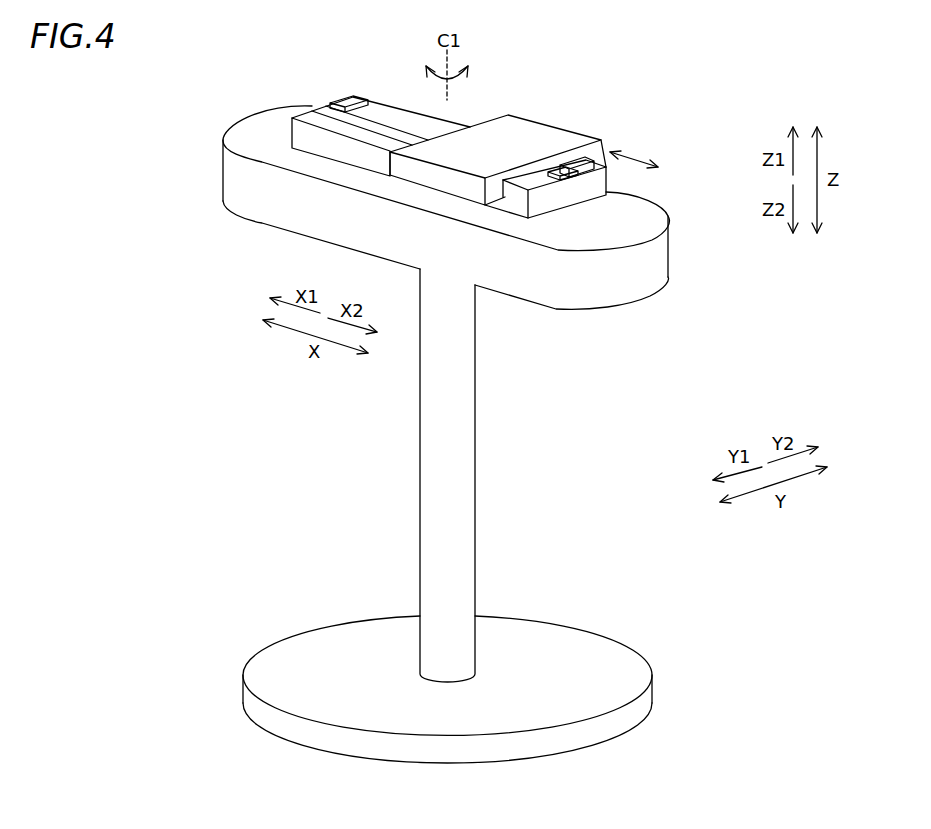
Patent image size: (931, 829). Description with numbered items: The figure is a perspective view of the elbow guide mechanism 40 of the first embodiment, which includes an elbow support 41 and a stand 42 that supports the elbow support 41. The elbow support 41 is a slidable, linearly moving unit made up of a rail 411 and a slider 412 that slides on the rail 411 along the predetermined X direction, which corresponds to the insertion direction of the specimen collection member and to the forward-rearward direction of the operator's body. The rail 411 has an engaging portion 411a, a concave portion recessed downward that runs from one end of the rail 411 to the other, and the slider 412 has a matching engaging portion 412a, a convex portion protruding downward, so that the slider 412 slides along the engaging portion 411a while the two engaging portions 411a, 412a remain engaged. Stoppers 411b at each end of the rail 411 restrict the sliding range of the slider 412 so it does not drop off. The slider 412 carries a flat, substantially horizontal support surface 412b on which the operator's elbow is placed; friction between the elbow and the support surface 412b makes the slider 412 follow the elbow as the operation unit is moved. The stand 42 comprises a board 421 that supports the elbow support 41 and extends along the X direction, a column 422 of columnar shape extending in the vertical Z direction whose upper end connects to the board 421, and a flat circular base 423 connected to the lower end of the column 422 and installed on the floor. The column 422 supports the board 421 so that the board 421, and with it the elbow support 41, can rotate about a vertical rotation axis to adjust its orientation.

The elbow guide mechanism 40 is at (703, 100).
The elbow support 41 is at (538, 108).
The rail 411 is at (405, 102).
The engaging portion 411a is at (372, 118).
The stopper 411b is at (342, 104).
The slider 412 is at (440, 177).
The engaging portion 412a is at (552, 169).
The support surface 412b is at (496, 140).
The stand 42 is at (536, 421).
The board 421 is at (633, 267).
The column 422 is at (445, 358).
The base 423 is at (632, 709).